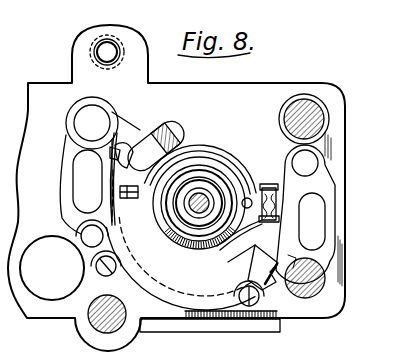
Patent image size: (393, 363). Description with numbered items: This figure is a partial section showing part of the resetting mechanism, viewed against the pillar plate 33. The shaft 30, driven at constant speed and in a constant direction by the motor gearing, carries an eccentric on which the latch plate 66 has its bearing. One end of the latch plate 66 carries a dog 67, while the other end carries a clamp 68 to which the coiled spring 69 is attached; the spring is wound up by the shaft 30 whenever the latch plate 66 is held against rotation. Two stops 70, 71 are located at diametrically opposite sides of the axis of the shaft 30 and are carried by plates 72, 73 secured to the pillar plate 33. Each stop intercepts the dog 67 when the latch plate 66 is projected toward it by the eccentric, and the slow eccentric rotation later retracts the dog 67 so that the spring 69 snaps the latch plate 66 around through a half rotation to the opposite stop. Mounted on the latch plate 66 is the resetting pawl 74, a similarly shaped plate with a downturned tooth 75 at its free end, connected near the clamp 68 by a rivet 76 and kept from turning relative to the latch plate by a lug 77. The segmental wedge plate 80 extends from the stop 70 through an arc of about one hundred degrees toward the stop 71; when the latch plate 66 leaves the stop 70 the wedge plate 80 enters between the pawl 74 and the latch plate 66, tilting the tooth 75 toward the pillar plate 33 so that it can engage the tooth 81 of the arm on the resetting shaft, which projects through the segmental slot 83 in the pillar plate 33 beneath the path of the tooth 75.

The shaft 30 is at (230, 175).
The pillar plate 33 is at (56, 319).
The latch plate 66 is at (242, 186).
The dog 67 is at (110, 150).
The clamp 68 is at (282, 191).
The coiled spring 69 is at (191, 150).
The stop 70 is at (265, 285).
The stop 71 is at (128, 147).
The plate 72 is at (322, 250).
The plate 73 is at (60, 208).
The resetting pawl 74 is at (210, 195).
The tooth 75 is at (182, 122).
The rivet 76 is at (270, 187).
The lug 77 is at (120, 192).
The wedge plate 80 is at (192, 288).
The tooth 81 is at (220, 158).
The segmental slot 83 is at (170, 122).